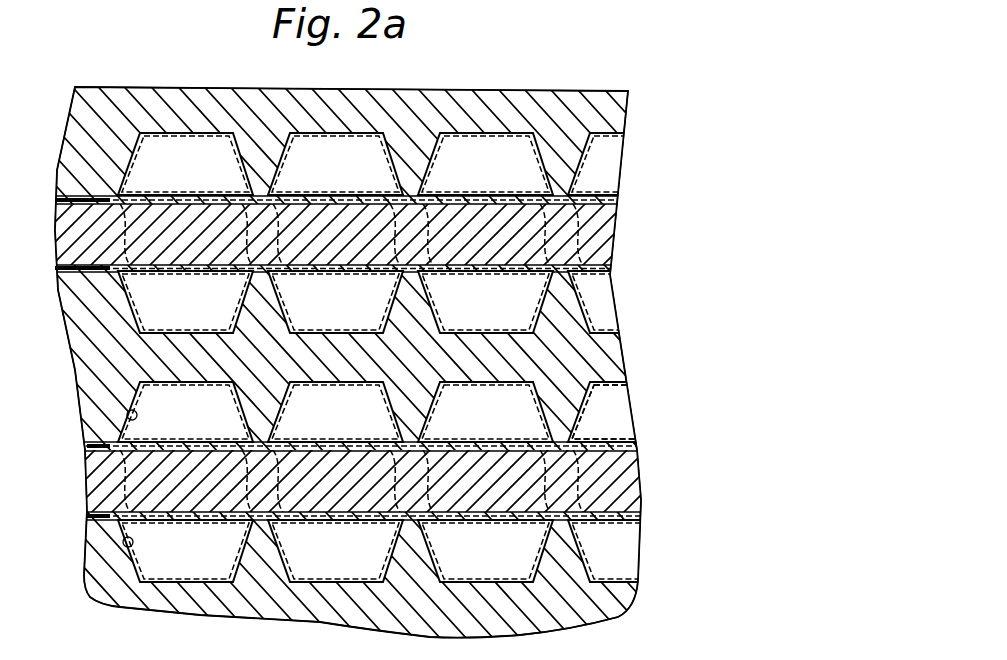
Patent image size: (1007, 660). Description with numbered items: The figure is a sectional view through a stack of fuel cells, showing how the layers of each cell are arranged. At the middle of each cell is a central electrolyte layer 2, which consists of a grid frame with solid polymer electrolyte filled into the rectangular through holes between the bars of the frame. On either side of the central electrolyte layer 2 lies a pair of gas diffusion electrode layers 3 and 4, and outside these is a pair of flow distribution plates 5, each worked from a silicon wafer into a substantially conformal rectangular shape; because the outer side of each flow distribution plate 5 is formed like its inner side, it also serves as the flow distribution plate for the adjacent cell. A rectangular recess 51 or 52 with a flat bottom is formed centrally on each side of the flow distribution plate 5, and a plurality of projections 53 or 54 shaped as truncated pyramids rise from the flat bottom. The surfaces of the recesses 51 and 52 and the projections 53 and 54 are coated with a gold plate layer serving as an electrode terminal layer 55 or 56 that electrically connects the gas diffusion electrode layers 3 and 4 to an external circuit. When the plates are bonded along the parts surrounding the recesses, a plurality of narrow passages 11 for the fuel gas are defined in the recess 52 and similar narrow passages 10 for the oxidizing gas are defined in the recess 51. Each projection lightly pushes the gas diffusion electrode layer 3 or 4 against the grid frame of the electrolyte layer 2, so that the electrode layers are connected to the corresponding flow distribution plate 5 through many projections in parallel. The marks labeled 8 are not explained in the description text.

The central electrolyte layer 2 is at (618, 230).
The gas diffusion electrode layer 3 is at (646, 522).
The gas diffusion electrode layer 4 is at (646, 452).
The flow distribution plate 5 is at (524, 90).
The electrode 8 is at (55, 200).
The narrow passages 10 is at (473, 326).
The narrow passages 11 is at (500, 186).
The rectangular recess 51 is at (130, 553).
The rectangular recess 52 is at (128, 411).
The projections 53 is at (572, 315).
The projections 54 is at (573, 170).
The electrode terminal layer 55 is at (590, 328).
The electrode terminal layer 56 is at (583, 404).